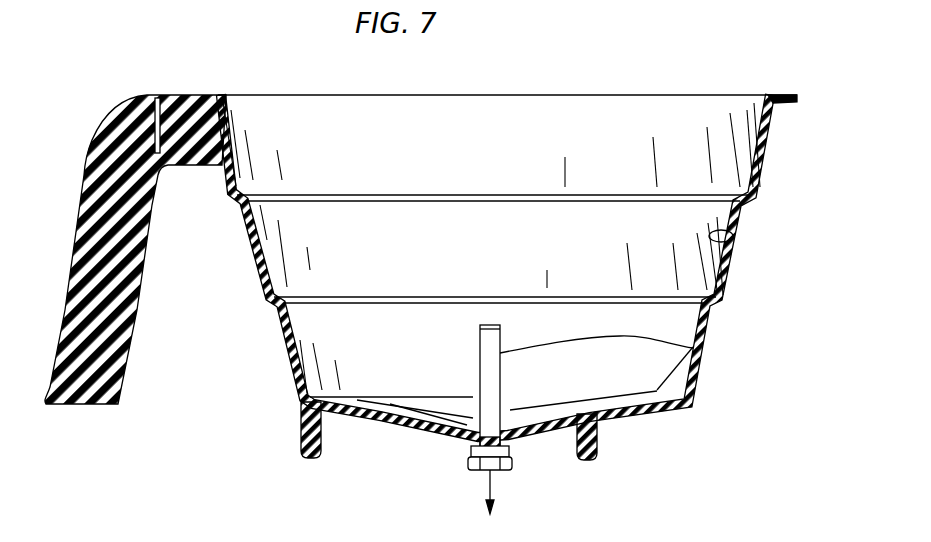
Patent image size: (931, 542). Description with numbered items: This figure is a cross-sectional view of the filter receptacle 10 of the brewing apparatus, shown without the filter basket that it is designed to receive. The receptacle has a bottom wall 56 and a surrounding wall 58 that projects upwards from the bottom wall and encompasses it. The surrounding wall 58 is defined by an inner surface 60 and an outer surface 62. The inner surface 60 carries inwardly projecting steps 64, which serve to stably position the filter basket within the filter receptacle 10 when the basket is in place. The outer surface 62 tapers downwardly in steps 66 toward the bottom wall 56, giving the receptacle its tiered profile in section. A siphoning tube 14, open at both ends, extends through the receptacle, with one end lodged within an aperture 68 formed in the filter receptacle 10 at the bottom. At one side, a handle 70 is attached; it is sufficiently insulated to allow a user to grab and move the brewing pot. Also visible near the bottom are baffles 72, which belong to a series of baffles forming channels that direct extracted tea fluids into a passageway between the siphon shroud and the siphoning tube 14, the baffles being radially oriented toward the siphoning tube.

The filter receptacle 10 is at (800, 149).
The siphoning tube 14 is at (693, 348).
The bottom wall 56 is at (412, 430).
The surrounding wall 58 is at (290, 353).
The inner surface 60 is at (733, 233).
The outer surface 62 is at (730, 277).
The inwardly projecting steps 64 is at (263, 288).
The steps 66 is at (233, 198).
The aperture 68 is at (512, 447).
The handle 70 is at (86, 228).
The baffles 72 is at (607, 418).